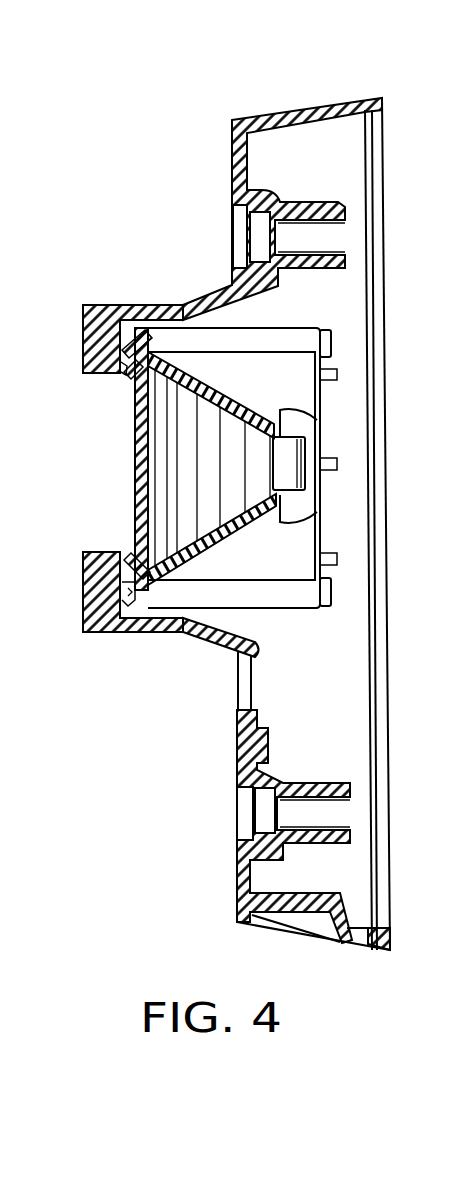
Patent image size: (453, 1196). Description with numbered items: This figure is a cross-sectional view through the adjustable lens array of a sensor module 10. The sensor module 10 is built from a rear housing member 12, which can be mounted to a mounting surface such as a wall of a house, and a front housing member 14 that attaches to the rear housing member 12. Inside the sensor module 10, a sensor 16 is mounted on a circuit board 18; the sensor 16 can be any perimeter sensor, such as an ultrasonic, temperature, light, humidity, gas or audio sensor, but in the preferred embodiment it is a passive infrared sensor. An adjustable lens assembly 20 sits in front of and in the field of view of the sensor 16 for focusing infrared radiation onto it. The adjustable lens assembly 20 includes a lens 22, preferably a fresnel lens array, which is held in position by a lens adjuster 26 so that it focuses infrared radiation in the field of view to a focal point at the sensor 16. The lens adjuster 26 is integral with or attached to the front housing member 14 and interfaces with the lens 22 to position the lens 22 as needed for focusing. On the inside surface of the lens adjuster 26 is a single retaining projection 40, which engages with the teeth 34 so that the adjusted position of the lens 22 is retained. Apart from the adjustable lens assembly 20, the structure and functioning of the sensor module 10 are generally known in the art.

The sensor module 10 is at (237, 101).
The rear housing member 12 is at (385, 183).
The front housing member 14 is at (327, 100).
The sensor 16 is at (293, 430).
The circuit board 18 is at (323, 400).
The adjustable lens assembly 20 is at (124, 465).
The lens 22 is at (133, 493).
The lens adjuster 26 is at (82, 605).
The teeth 34 is at (127, 377).
The retaining projection 40 is at (122, 372).